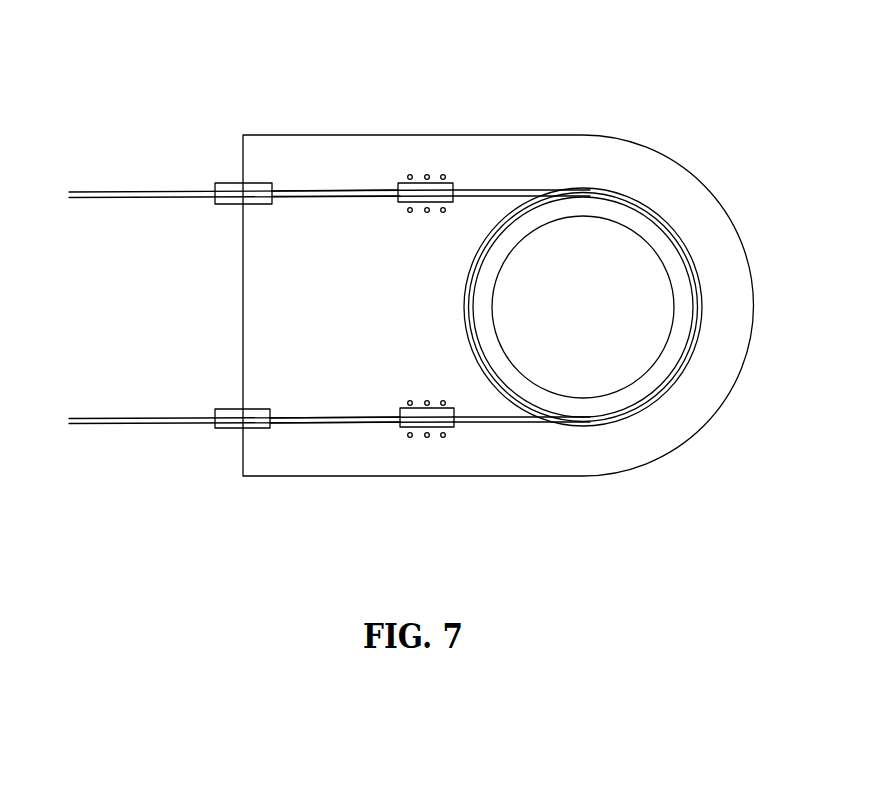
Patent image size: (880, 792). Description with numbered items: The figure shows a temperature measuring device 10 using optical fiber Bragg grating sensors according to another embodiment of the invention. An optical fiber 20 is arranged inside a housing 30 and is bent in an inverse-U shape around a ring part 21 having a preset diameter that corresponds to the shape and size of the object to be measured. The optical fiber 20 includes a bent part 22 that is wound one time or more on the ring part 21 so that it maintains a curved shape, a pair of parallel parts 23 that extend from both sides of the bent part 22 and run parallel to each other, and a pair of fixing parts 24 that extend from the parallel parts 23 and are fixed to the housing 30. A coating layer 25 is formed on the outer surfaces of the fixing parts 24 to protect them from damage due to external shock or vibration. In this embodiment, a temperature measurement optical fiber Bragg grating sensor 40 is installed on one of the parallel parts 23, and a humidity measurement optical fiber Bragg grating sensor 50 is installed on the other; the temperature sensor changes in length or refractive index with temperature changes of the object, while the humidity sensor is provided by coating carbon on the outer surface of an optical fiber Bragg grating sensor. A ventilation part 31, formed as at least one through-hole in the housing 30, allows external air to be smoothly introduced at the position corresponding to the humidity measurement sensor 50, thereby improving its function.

The temperature measuring device 10 is at (302, 56).
The optical fiber 20 is at (409, 449).
The ring part 21 is at (498, 210).
The bent part 22 is at (613, 422).
The parallel parts 23 is at (382, 197).
The fixing parts 24 is at (253, 204).
The coating layer 25 is at (223, 204).
The housing 30 is at (540, 135).
The ventilation part 31 is at (410, 208).
The temperature measurement optical fiber Bragg grating sensor 40 is at (438, 185).
The humidity measurement optical fiber Bragg grating sensor 50 is at (451, 428).